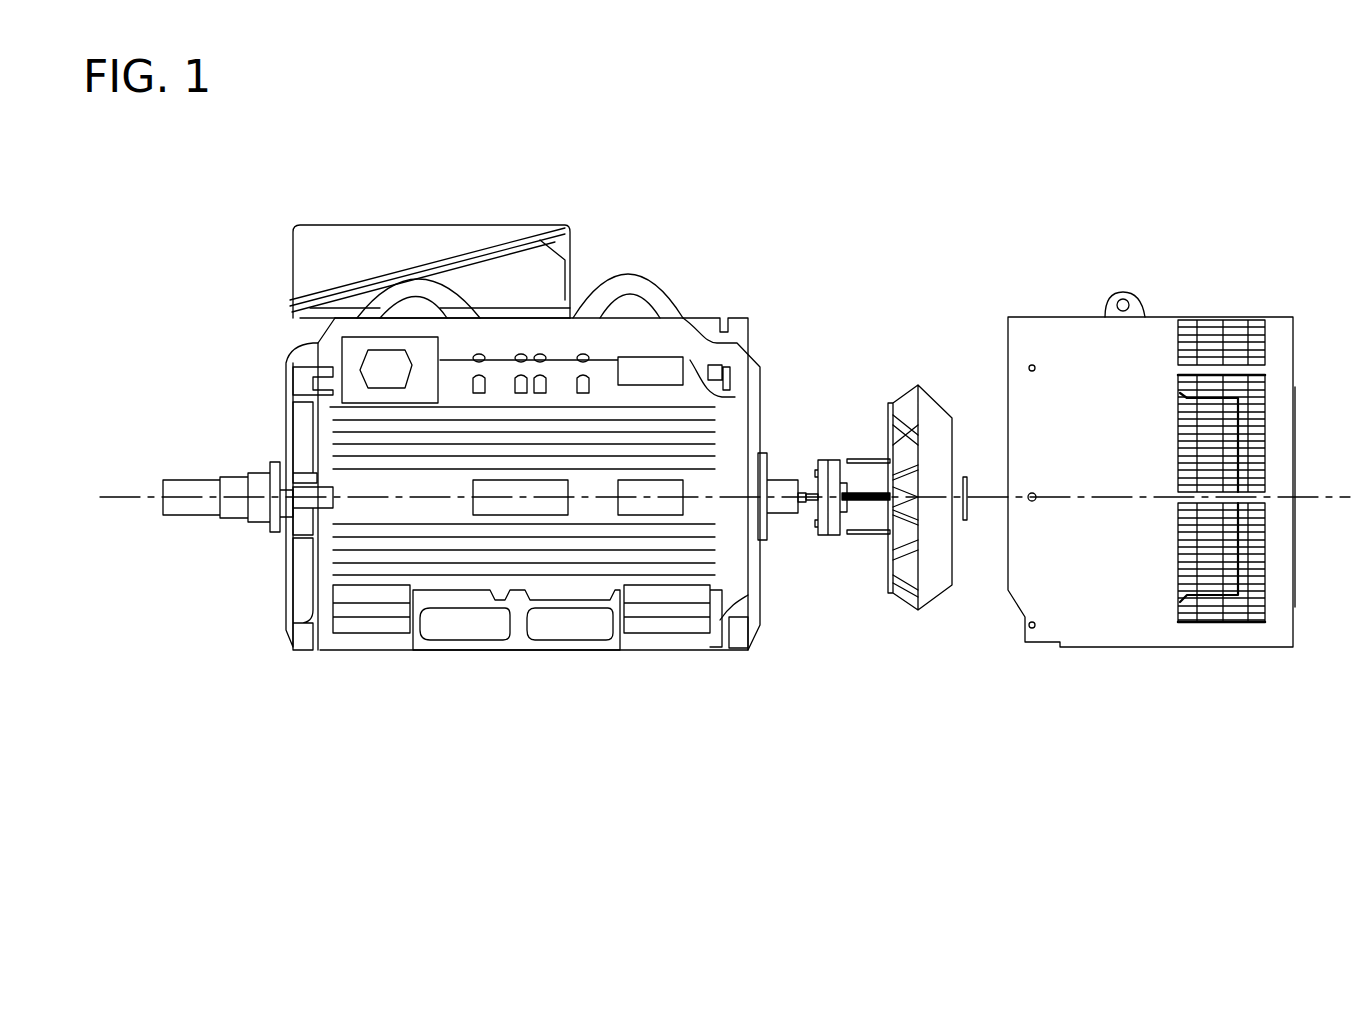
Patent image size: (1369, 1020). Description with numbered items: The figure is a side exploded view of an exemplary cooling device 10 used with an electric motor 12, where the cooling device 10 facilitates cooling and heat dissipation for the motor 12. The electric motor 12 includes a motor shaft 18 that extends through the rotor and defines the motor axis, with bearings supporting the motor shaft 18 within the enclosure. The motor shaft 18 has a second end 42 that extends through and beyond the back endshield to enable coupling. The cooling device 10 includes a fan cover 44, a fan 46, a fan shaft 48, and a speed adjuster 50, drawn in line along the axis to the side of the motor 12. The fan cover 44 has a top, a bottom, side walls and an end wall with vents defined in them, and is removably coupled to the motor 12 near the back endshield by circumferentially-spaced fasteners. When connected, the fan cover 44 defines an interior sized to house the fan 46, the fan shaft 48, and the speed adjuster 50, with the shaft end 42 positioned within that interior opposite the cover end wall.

The cooling device 10 is at (876, 378).
The electric motor 12 is at (685, 330).
The motor shaft 18 is at (782, 512).
The second end 42 is at (803, 503).
The fan cover 44 is at (1066, 330).
The fan 46 is at (932, 410).
The fan shaft 48 is at (878, 493).
The speed adjuster 50 is at (828, 460).